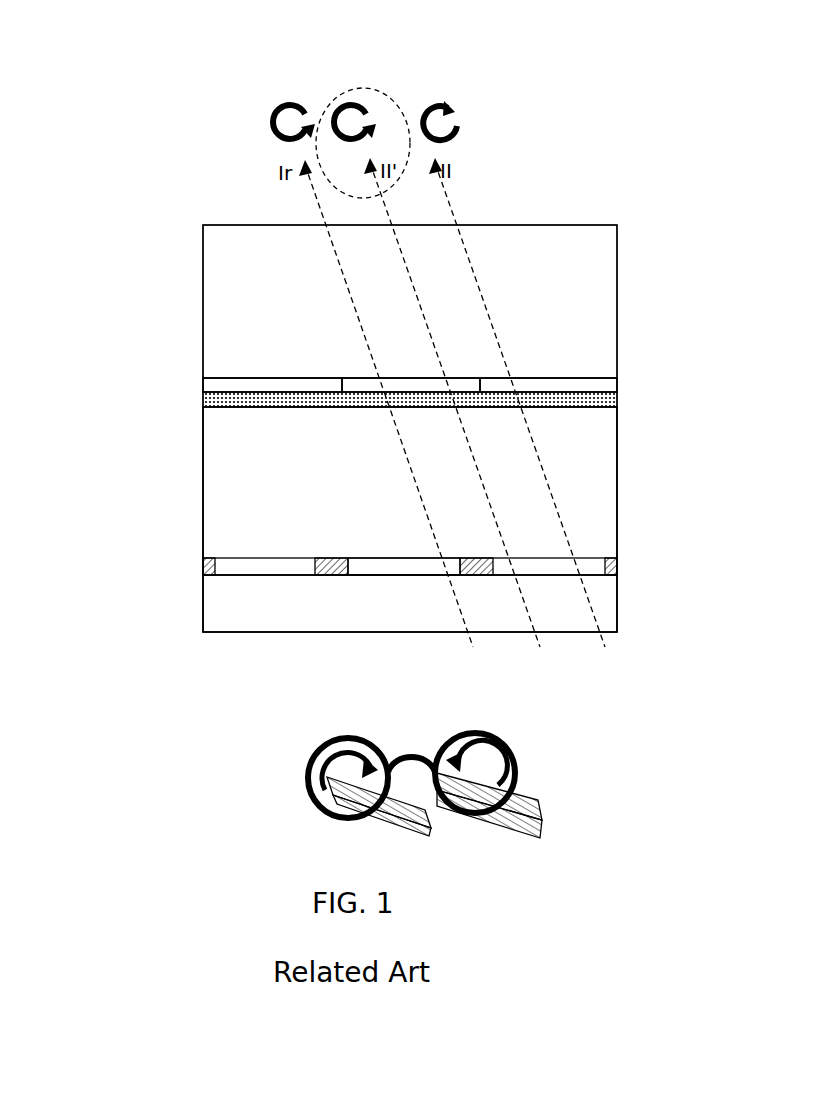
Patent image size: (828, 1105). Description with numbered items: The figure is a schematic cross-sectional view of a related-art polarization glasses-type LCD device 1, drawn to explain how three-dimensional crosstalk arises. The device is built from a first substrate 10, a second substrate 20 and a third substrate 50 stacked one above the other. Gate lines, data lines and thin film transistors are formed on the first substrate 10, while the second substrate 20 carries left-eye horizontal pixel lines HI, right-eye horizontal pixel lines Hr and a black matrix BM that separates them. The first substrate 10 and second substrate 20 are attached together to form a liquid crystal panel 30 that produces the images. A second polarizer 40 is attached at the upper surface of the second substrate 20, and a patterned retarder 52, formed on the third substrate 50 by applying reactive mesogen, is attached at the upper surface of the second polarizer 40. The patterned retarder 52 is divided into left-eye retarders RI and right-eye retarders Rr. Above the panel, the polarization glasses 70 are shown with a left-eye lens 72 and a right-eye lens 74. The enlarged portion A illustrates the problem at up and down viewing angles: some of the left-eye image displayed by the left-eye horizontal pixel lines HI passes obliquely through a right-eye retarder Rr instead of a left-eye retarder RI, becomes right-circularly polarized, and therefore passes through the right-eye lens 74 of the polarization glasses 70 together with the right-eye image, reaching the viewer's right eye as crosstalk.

The polarization glasses-type LCD device 1 is at (468, 48).
The first substrate 10 is at (220, 597).
The second substrate 20 is at (220, 515).
The liquid crystal panel 30 is at (128, 510).
The second polarizer 40 is at (215, 399).
The third substrate 50 is at (220, 305).
The patterned retarder 52 is at (198, 381).
The polarization glasses 70 is at (445, 672).
The left eye lens 72 is at (368, 735).
The right eye lens 74 is at (442, 735).
The portion A is at (345, 92).
The left-eye retarders RI is at (272, 378).
The right-eye retarders Rr is at (398, 379).
The left-eye horizontal pixel lines HI is at (264, 559).
The right-eye horizontal pixel lines Hr is at (378, 559).
The black matrix BM is at (325, 576).